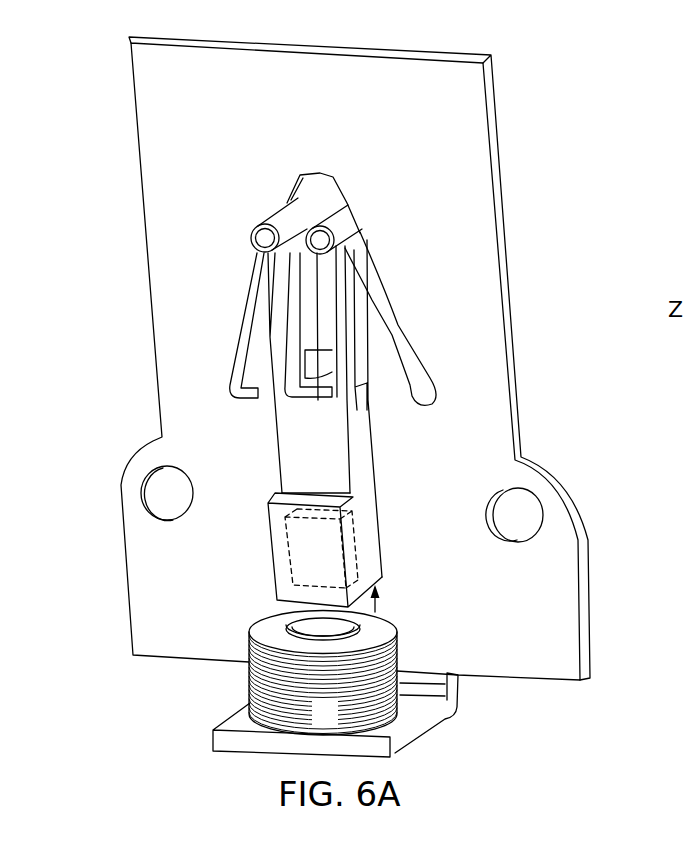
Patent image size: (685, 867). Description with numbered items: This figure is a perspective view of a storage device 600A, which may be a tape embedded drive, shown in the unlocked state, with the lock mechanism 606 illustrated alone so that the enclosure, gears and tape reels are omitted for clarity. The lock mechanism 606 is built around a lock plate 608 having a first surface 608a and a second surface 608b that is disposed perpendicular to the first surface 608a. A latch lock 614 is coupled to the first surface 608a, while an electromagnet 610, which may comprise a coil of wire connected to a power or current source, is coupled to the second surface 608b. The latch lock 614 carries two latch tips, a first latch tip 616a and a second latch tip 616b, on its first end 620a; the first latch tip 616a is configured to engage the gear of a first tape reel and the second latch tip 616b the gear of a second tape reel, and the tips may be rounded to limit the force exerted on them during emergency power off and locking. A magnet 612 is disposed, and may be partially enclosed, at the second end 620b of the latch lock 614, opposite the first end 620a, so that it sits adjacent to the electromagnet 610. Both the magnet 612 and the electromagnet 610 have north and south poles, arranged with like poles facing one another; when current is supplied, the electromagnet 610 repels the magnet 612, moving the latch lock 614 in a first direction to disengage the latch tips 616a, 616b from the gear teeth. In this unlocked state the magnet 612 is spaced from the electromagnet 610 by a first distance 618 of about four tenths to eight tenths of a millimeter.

The storage device 600A is at (575, 113).
The lock mechanism 606 is at (532, 252).
The lock plate 608 is at (552, 606).
The first surface 608a is at (208, 117).
The second surface 608b is at (424, 692).
The electromagnet 610 is at (250, 683).
The magnet 612 is at (365, 543).
The latch lock 614 is at (333, 460).
The first latch tip 616a is at (262, 239).
The second latch tip 616b is at (328, 240).
The first distance 618 is at (390, 610).
The first end 620a is at (267, 207).
The second end 620b is at (258, 573).